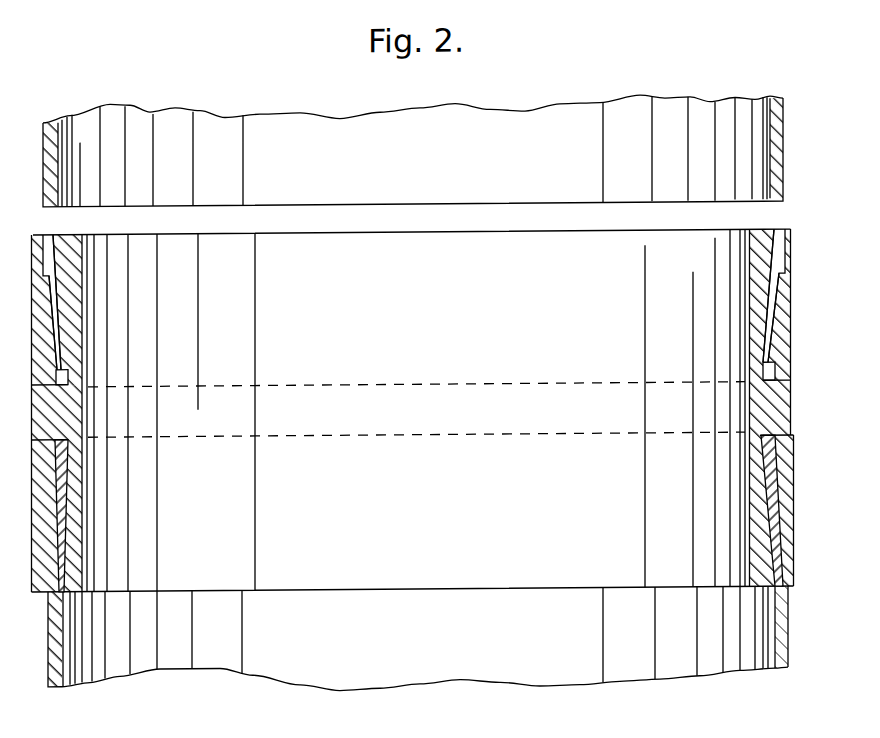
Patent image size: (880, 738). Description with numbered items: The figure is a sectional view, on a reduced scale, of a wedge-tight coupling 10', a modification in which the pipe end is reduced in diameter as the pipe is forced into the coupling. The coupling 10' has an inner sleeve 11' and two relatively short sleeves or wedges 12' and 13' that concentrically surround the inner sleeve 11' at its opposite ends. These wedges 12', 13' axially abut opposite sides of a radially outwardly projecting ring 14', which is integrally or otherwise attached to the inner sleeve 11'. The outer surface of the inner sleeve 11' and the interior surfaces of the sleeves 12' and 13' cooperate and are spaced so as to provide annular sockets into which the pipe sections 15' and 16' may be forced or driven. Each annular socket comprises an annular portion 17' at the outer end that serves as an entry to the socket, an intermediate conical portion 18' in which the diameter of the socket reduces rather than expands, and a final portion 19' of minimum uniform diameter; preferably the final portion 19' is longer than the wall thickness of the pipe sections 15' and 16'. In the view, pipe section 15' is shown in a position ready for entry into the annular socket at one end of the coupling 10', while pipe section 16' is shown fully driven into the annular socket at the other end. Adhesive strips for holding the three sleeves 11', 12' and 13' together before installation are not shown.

The coupling 10' is at (437, 410).
The inner sleeve 11' is at (413, 410).
The sleeve or wedge 12' is at (445, 299).
The sleeve or wedge 13' is at (452, 513).
The radially outwardly projecting ring 14' is at (441, 435).
The pipe section 15' is at (440, 150).
The pipe section 16' is at (449, 639).
The annular portion 17' is at (449, 401).
The intermediate conical portion 18' is at (452, 381).
The final portion 19' is at (441, 485).